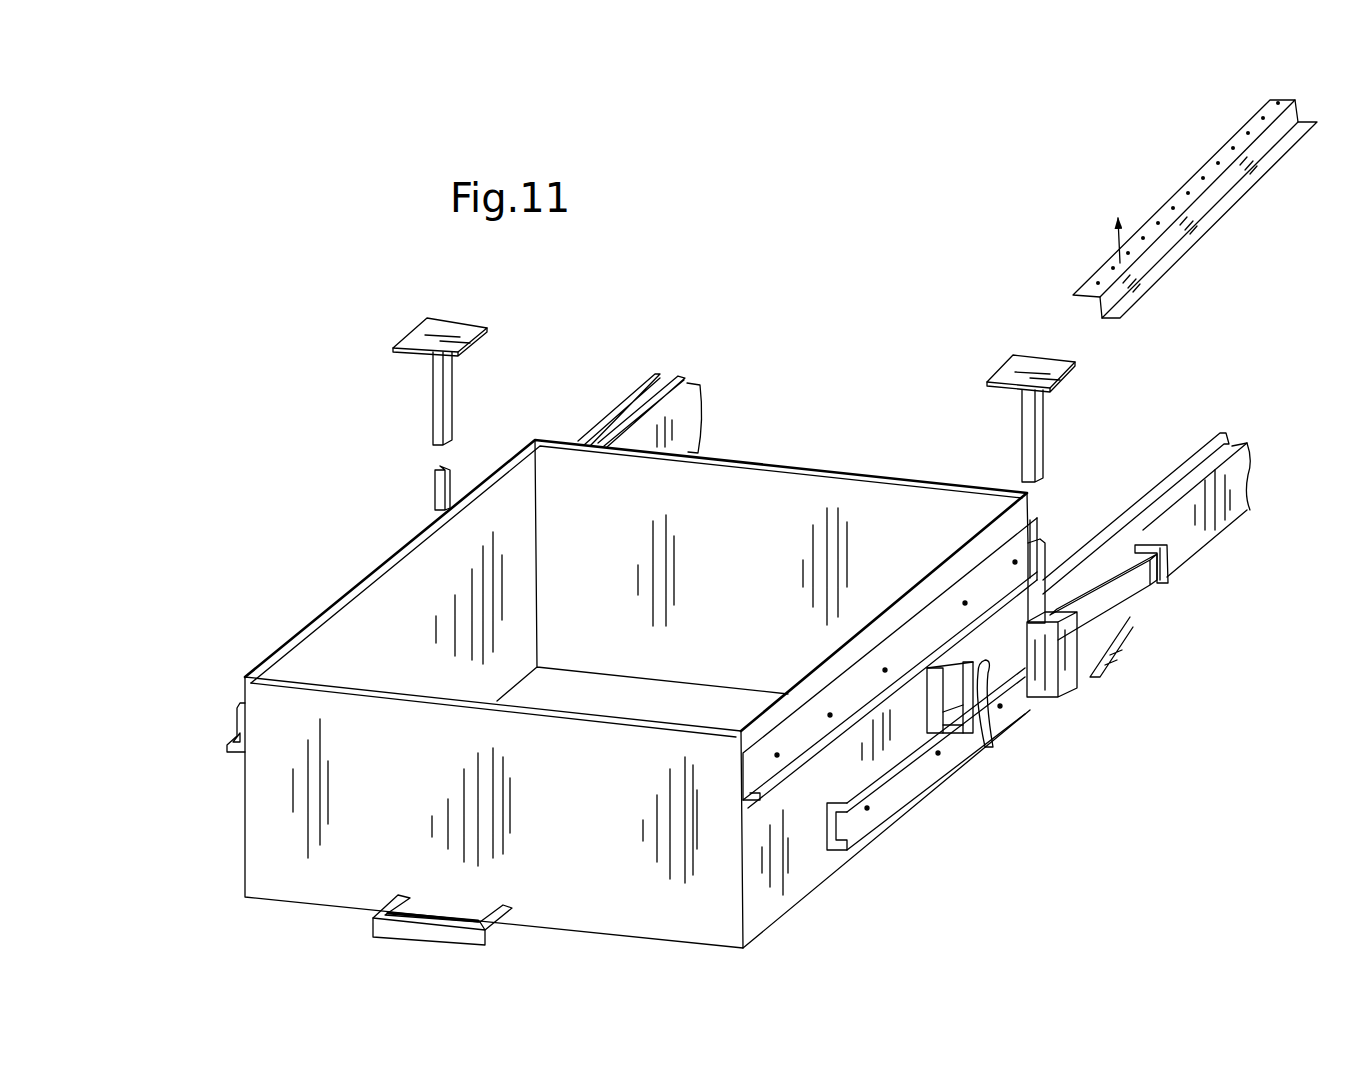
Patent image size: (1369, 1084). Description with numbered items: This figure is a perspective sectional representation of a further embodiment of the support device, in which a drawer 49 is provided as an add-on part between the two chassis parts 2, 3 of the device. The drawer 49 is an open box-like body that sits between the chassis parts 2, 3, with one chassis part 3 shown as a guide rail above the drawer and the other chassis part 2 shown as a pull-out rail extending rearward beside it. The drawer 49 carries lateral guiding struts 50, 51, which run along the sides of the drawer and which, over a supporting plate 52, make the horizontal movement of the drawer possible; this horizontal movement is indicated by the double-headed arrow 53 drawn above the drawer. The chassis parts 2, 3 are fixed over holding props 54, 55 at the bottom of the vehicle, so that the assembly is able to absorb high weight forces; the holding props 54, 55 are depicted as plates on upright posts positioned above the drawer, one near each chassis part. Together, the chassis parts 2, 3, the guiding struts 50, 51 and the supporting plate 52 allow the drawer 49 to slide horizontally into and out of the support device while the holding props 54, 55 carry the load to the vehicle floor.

The chassis part 2 is at (1217, 545).
The chassis part 3 is at (645, 370).
The drawer 49 is at (328, 837).
The lateral guiding strut 50 is at (815, 810).
The lateral guiding strut 51 is at (227, 752).
The supporting plate 52 is at (935, 727).
The arrow 53 is at (795, 447).
The holding prop 54 is at (1010, 368).
The holding prop 55 is at (475, 325).